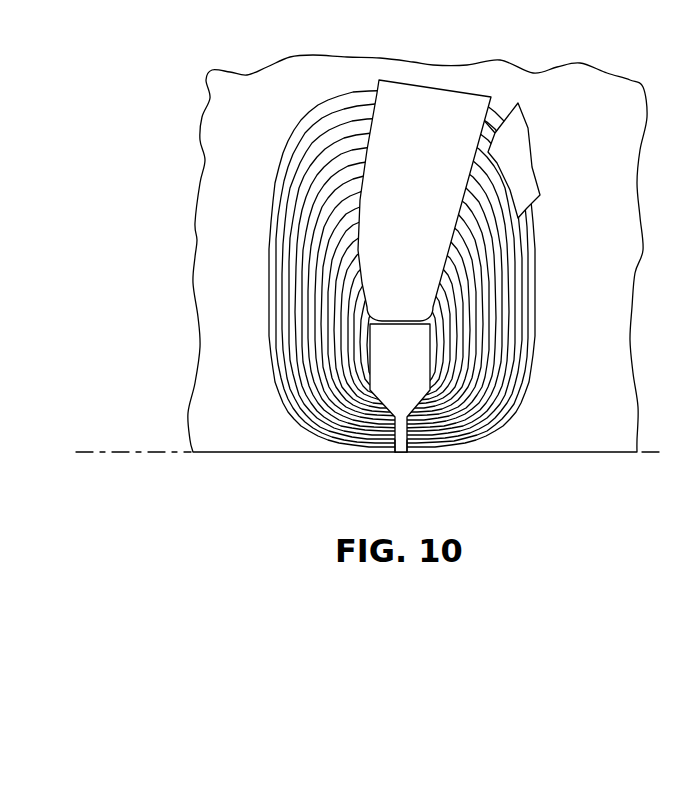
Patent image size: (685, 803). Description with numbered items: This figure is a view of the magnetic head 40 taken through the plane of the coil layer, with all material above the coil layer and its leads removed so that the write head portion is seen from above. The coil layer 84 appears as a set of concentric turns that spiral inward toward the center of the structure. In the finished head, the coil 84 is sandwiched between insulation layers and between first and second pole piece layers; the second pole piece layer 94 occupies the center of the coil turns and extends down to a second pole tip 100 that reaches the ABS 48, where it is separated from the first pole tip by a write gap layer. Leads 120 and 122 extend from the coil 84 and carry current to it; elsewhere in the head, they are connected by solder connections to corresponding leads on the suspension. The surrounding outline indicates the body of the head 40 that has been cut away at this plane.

The magnetic head 40 is at (556, 247).
The ABS 48 is at (132, 451).
The coil layer 84 is at (508, 347).
The second pole piece layer 94 is at (412, 375).
The second pole tip 100 is at (401, 453).
The lead 120 is at (430, 194).
The lead 122 is at (529, 150).